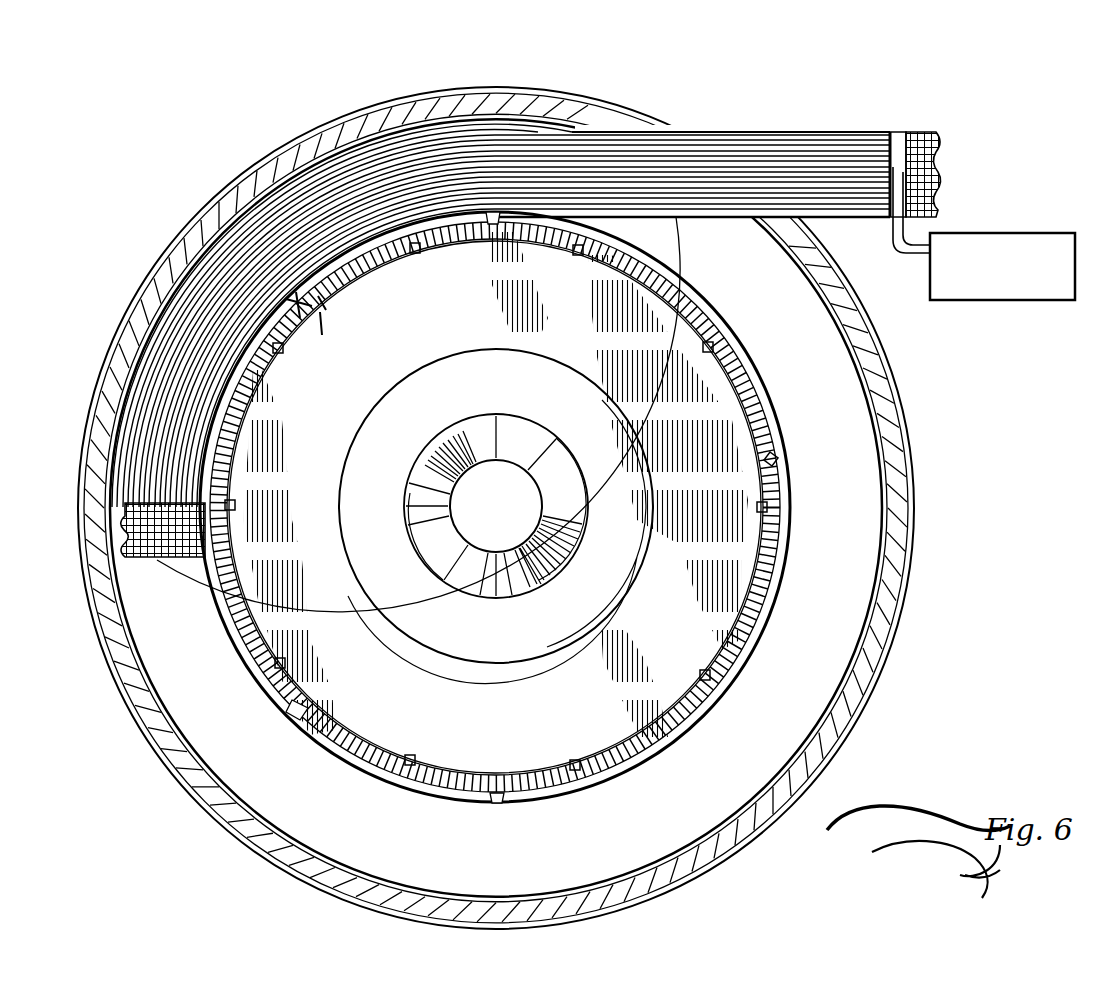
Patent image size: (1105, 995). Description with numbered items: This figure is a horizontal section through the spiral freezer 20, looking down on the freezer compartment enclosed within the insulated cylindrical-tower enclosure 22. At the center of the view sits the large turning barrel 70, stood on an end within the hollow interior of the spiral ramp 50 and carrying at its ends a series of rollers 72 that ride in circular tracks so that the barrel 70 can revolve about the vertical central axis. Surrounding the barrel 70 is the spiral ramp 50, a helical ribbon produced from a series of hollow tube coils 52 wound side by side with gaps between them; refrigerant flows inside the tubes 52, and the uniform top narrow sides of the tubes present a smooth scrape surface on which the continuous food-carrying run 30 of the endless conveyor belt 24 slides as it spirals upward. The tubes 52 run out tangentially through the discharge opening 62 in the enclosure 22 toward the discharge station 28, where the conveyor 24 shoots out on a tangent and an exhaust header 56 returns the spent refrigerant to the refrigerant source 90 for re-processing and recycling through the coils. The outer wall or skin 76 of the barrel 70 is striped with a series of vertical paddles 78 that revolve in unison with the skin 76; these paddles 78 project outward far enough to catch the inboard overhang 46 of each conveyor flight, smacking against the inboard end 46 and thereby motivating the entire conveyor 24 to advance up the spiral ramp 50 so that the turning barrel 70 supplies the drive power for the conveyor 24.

The spiral freezer 20 is at (496, 495).
The cylindrical-tower enclosure 22 is at (432, 96).
The endless conveyor belt 24 is at (570, 342).
The discharge station 28 is at (924, 134).
The food-carrying run 30 is at (187, 543).
The inboard end (overhang) 46 is at (324, 313).
The spiral ramp 50 is at (220, 355).
The tube coils 52 is at (705, 191).
The exhaust header 56 is at (893, 140).
The discharge opening 62 is at (690, 128).
The turning barrel 70 is at (453, 237).
The rollers 72 is at (428, 768).
The outer wall or skin 76 is at (786, 464).
The paddles 78 is at (806, 518).
The refrigerant source 90 is at (1010, 236).